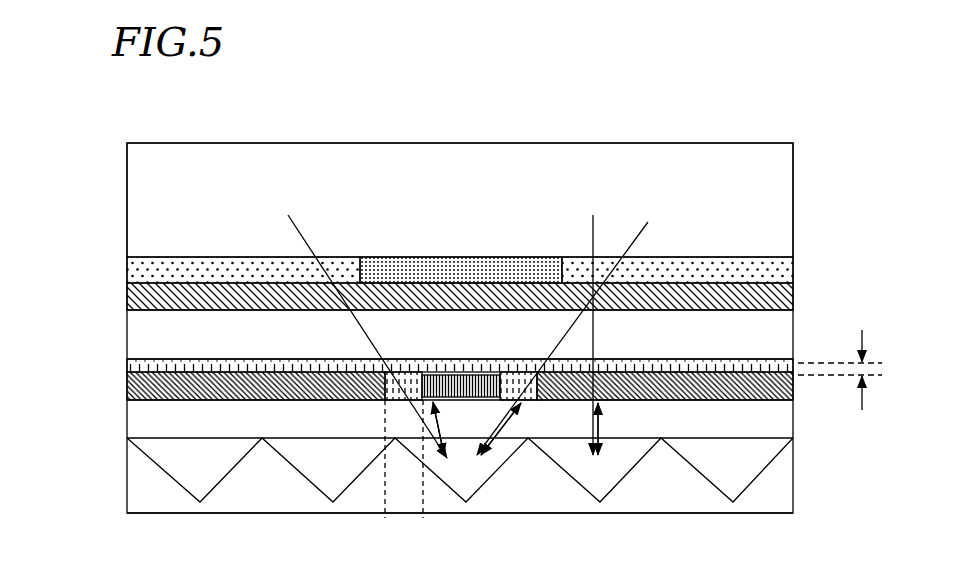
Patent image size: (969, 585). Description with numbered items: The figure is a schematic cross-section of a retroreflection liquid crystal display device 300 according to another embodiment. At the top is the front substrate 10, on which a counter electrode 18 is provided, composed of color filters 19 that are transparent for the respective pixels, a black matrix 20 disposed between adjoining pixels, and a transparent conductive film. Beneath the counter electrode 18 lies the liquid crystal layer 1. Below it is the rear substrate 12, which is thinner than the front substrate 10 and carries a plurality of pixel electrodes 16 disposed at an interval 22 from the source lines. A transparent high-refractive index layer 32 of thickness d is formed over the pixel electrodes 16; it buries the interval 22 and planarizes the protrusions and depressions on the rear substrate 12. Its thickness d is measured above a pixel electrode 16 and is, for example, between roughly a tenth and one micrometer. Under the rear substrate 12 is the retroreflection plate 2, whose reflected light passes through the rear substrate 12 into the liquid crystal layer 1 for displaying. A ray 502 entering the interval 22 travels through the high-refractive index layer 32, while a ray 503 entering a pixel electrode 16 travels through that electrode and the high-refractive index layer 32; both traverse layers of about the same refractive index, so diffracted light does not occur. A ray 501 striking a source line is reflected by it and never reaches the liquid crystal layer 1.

The liquid crystal layer 1 is at (152, 322).
The retroreflection plate 2 is at (777, 488).
The front substrate 10 is at (773, 183).
The rear substrate 12 is at (772, 425).
The pixel electrodes 16 is at (157, 373).
The counter electrode 18 is at (795, 294).
The color filters 19 is at (685, 262).
The black matrix 20 is at (445, 266).
The interval 22 is at (423, 518).
The high-refractive index layer 32 is at (782, 365).
The display device 300 is at (486, 275).
The ray 501 is at (368, 337).
The ray 502 is at (508, 421).
The ray 503 is at (600, 421).
The thickness d is at (842, 370).